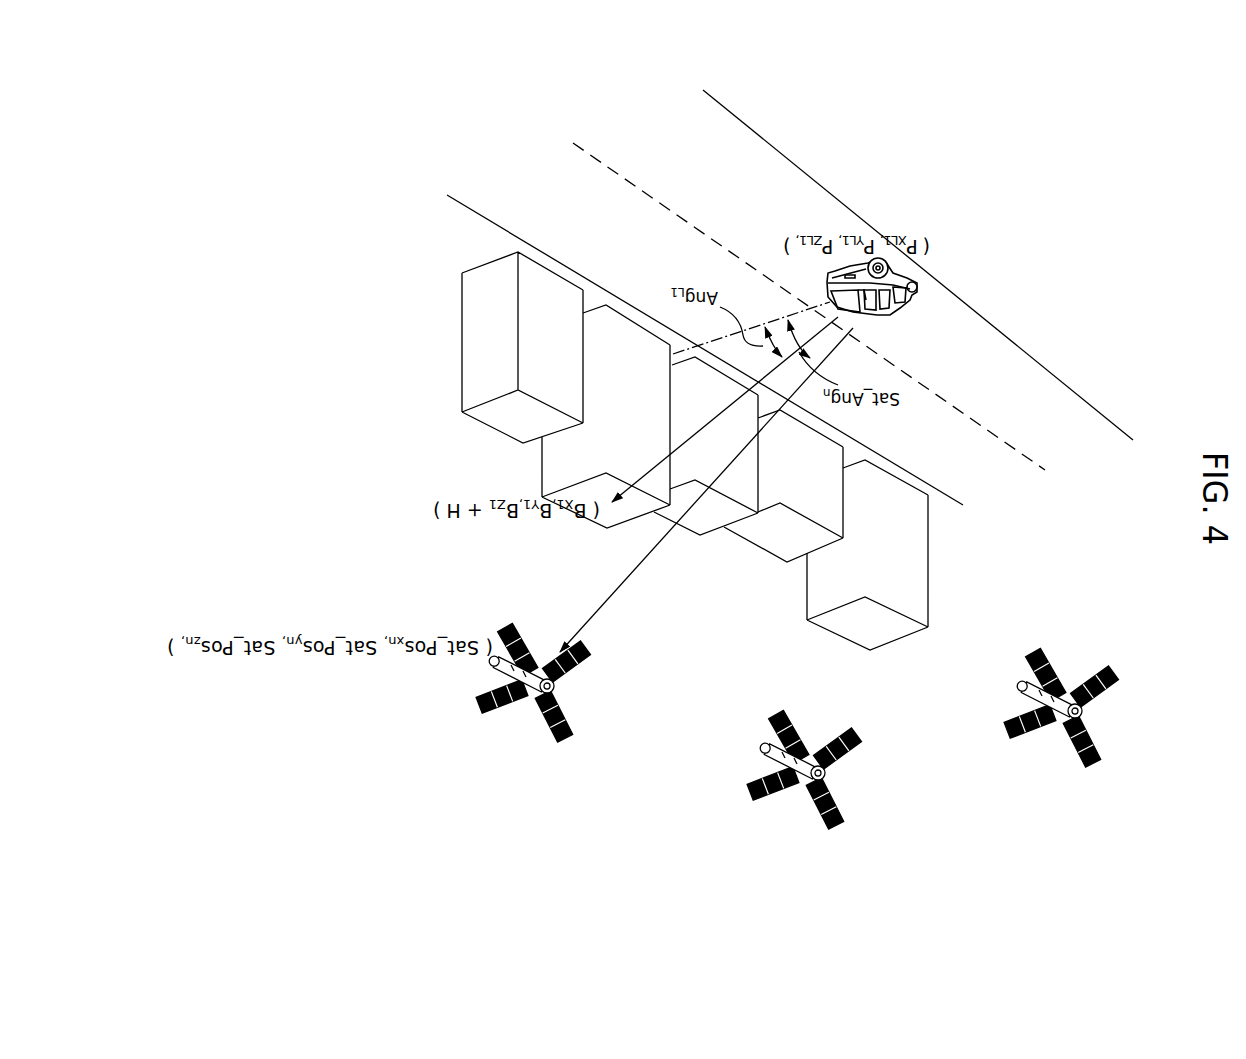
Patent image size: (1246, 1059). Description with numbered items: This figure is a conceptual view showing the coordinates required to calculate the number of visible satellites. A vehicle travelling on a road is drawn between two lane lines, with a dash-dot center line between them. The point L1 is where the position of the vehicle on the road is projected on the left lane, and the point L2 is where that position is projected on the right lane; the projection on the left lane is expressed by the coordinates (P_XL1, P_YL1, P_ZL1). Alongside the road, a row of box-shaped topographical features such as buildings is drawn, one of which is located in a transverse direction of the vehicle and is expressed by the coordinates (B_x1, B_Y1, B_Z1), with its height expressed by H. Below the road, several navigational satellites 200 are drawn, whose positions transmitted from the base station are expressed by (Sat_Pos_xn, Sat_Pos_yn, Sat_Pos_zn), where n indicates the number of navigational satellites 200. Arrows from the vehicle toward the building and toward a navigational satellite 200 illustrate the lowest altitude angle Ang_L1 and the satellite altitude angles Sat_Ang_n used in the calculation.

The navigational satellite 200 is at (512, 684).
The point where the position of the vehicle on the road is projected on the left lan L1 is at (663, 133).
The point where the position of the vehicle on the road is projected on the right la L2 is at (545, 193).